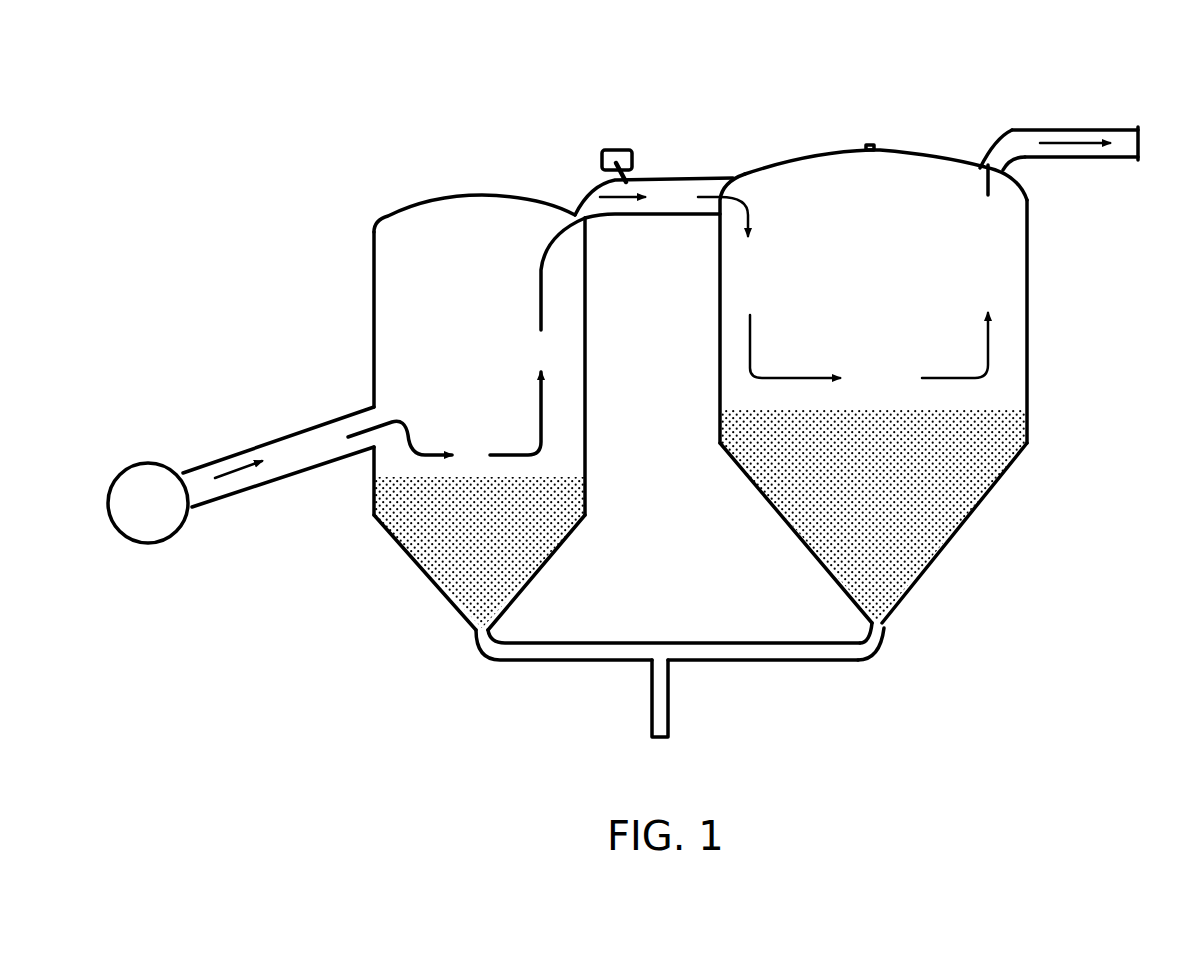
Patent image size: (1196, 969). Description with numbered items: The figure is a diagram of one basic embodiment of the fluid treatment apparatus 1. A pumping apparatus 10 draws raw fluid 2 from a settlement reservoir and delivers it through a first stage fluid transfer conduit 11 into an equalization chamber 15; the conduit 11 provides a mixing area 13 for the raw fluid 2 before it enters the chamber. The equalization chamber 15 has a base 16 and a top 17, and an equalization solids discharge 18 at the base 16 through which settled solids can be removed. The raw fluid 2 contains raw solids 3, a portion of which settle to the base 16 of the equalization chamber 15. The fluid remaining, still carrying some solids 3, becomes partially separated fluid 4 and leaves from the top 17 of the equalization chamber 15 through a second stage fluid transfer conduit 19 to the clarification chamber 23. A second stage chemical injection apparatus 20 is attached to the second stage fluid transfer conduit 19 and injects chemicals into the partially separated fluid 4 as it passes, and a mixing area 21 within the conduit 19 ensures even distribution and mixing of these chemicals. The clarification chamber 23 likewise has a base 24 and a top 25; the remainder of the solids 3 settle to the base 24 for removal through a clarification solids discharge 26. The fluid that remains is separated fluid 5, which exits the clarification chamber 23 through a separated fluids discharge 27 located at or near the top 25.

The fluid treatment apparatus 1 is at (200, 130).
The raw fluid 2 is at (405, 420).
The raw solids 3 is at (535, 560).
The partially separated fluid 4 is at (615, 214).
The separated fluid 5 is at (1058, 142).
The pumping apparatus 10 is at (132, 462).
The first stage fluid transfer conduit 11 is at (240, 446).
The mixing area 13 is at (355, 462).
The equalization chamber 15 is at (372, 285).
The base 16 is at (420, 568).
The top 17 is at (397, 207).
The equalization solids discharge 18 is at (478, 632).
The second stage fluid transfer conduit 19 is at (578, 210).
The second stage chemical injection apparatus 20 is at (615, 150).
The mixing area 21 is at (675, 170).
The clarification chamber 23 is at (1027, 368).
The base 24 is at (783, 520).
The top 25 is at (800, 157).
The clarification solids discharge 26 is at (882, 625).
The separated fluids discharge 27 is at (992, 148).